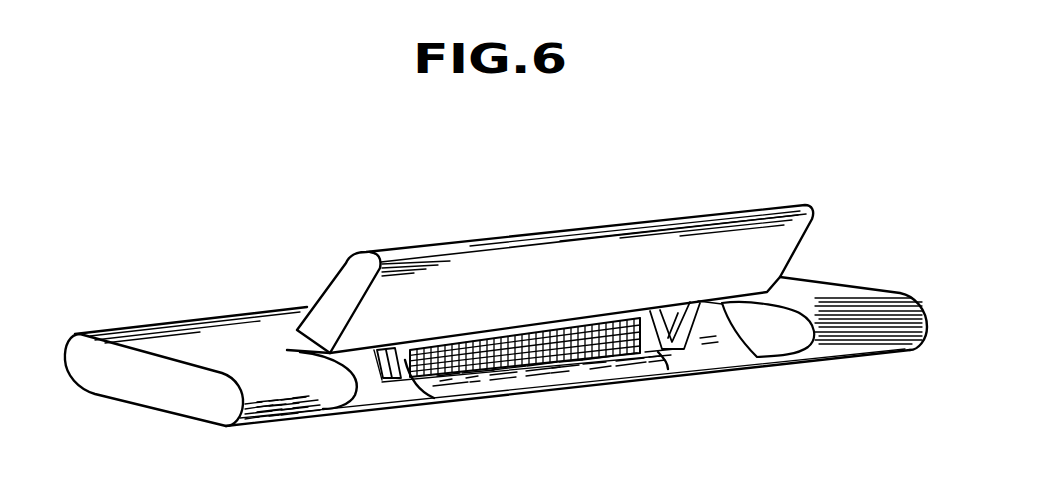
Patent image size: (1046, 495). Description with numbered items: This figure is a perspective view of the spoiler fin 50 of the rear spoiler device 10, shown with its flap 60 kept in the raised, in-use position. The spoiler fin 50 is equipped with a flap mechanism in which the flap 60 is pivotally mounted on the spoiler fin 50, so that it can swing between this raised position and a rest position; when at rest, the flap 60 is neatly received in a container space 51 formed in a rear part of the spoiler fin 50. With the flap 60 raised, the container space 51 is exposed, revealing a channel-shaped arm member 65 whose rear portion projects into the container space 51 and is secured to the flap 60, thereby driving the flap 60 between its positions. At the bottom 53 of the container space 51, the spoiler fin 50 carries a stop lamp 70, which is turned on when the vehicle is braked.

The rear spoiler device 10 is at (730, 183).
The spoiler fin 50 is at (841, 281).
The container space 51 is at (776, 343).
The bottom of the container space 53 is at (652, 352).
The flap 60 is at (574, 227).
The channel-shaped arm member 65 is at (400, 350).
The stop lamp 70 is at (511, 358).